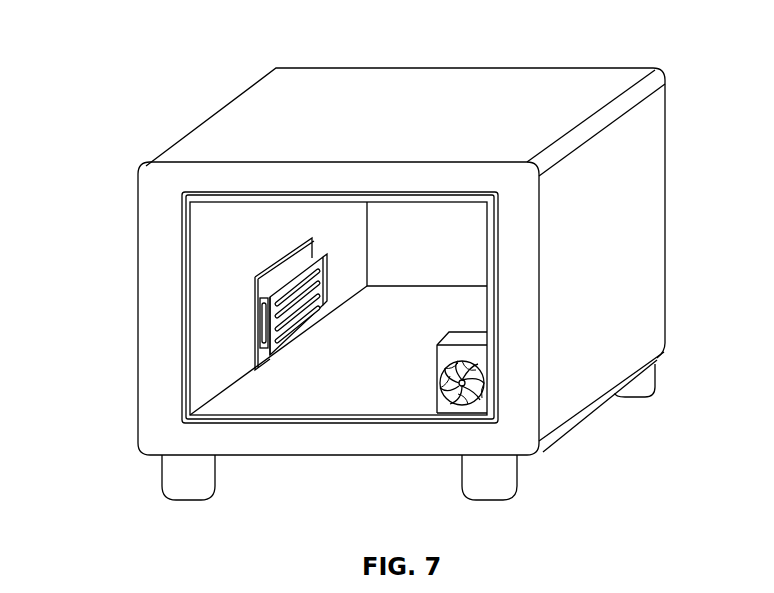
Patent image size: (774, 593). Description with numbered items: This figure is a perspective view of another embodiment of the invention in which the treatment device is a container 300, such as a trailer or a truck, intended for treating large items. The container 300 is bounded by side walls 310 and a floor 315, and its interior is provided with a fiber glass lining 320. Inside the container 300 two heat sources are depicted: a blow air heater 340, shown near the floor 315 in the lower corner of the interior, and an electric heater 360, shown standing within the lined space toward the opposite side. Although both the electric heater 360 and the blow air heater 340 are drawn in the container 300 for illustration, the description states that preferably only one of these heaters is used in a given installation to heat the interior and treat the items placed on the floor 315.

The container 300 is at (110, 55).
The side walls 310 is at (654, 200).
The floor 315 is at (322, 398).
The fiber glass lining 320 is at (210, 260).
The blow air heater 340 is at (445, 405).
The electric heater 360 is at (258, 313).